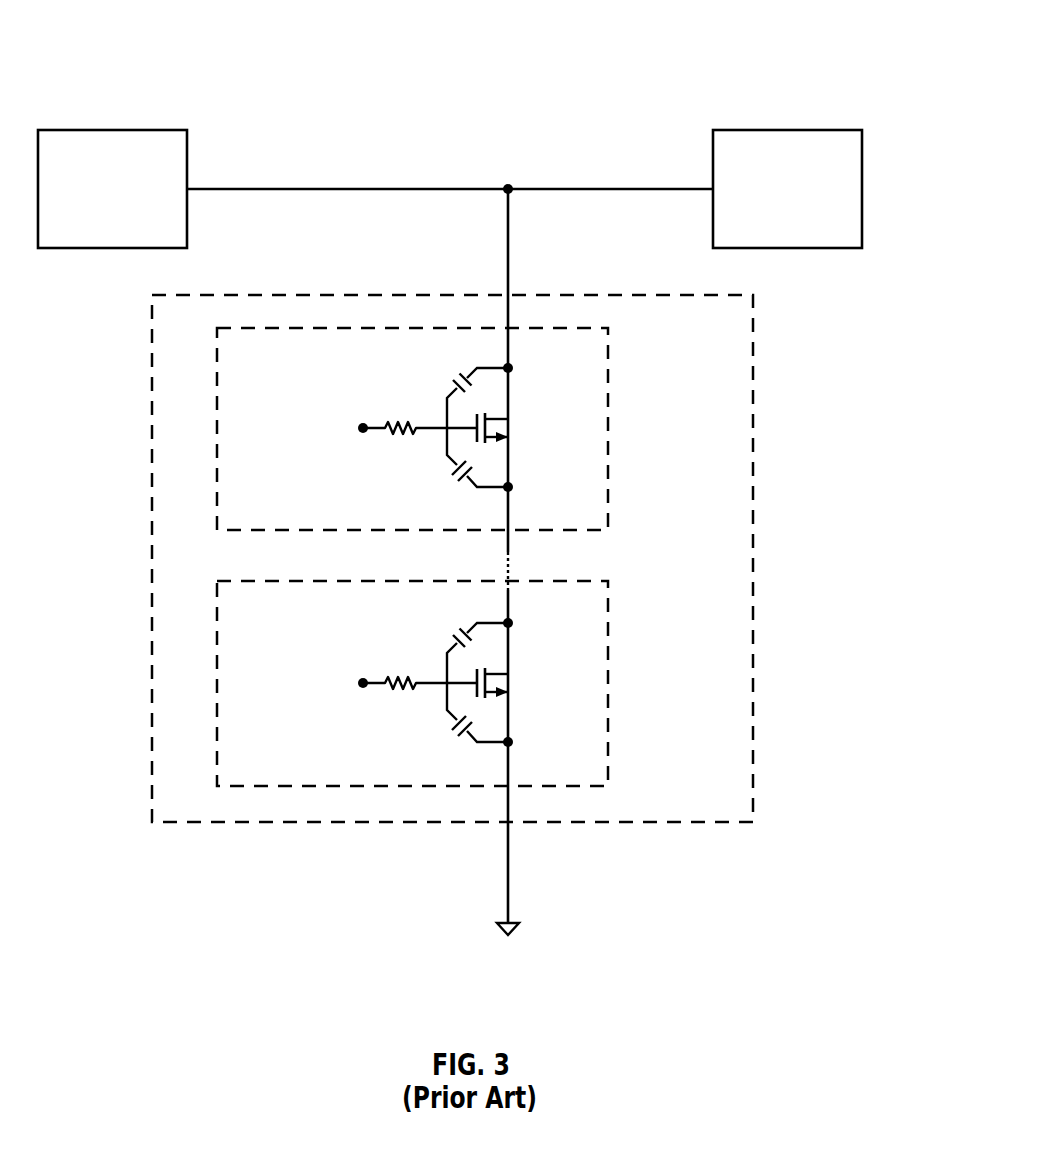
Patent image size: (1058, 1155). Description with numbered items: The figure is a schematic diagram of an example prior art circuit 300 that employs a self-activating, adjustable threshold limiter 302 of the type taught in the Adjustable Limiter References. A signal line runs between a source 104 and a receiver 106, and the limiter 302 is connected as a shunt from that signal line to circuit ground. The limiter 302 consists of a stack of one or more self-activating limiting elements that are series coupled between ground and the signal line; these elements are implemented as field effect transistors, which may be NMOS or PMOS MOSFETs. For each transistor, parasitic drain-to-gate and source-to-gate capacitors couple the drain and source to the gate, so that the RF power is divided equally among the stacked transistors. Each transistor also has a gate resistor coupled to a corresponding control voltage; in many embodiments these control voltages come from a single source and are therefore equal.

The prior art circuit 300 is at (58, 26).
The source 104 is at (187, 130).
The receiver 106 is at (862, 130).
The self-activating, adjustable threshold limiter 302 is at (753, 505).